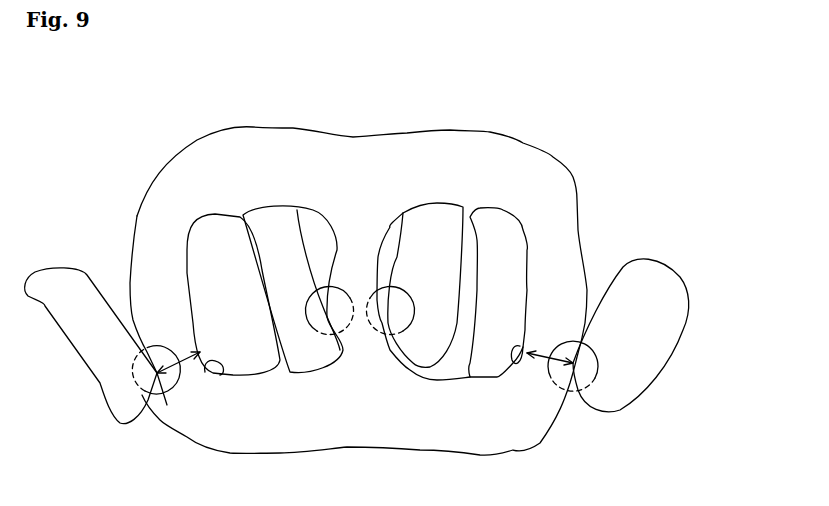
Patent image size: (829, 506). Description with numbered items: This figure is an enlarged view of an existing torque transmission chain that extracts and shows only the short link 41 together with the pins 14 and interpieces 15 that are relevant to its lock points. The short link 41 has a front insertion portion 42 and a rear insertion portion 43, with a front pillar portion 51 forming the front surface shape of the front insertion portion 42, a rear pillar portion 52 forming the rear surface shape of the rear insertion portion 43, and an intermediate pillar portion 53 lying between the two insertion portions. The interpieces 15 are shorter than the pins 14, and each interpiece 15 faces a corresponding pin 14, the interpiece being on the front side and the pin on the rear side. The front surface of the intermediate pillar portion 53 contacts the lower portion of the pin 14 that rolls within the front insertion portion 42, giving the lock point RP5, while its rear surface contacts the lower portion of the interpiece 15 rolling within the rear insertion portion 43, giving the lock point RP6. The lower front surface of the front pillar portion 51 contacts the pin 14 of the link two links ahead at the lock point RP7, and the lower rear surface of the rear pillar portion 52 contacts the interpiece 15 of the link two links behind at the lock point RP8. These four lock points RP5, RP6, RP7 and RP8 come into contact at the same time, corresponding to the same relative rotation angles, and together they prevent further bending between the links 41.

The pin 14 is at (217, 237).
The interpiece 15 is at (82, 283).
The short link 41 is at (560, 162).
The front insertion portion 42 is at (520, 340).
The rear insertion portion 43 is at (227, 373).
The front pillar portion 51 is at (565, 272).
The rear pillar portion 52 is at (158, 260).
The intermediate pillar portion 53 is at (358, 272).
The lock point RP5 is at (392, 336).
The lock point RP6 is at (317, 337).
The lock point RP7 is at (591, 393).
The lock point RP8 is at (167, 405).